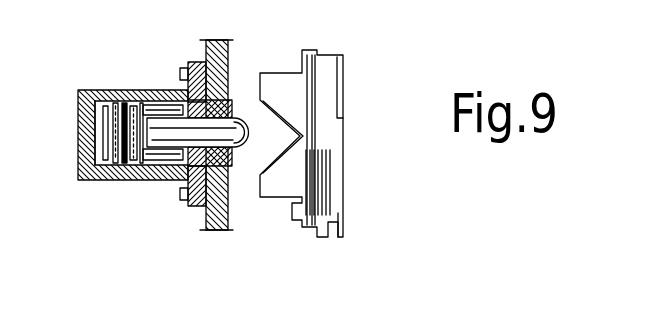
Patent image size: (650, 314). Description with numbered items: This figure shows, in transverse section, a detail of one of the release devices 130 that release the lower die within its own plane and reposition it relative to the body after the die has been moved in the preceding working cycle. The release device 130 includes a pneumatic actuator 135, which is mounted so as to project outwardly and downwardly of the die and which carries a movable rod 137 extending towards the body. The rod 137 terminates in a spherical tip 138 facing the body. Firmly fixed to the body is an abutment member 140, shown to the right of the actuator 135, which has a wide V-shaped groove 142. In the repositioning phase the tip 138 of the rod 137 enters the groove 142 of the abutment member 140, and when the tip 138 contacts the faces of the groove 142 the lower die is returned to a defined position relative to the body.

The release device 130 is at (172, 198).
The pneumatic actuator 135 is at (75, 88).
The movable rod 137 is at (172, 130).
The spherical tip 138 is at (242, 148).
The abutment member 140 is at (296, 172).
The V-shaped groove 142 is at (259, 108).